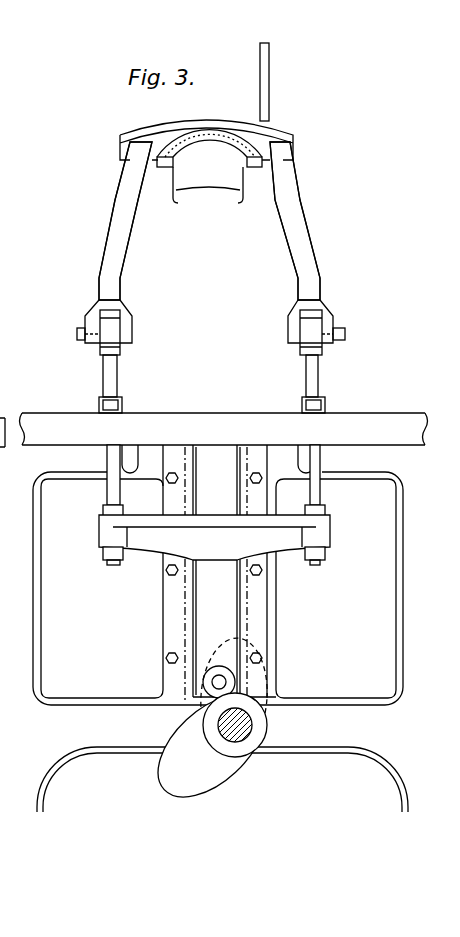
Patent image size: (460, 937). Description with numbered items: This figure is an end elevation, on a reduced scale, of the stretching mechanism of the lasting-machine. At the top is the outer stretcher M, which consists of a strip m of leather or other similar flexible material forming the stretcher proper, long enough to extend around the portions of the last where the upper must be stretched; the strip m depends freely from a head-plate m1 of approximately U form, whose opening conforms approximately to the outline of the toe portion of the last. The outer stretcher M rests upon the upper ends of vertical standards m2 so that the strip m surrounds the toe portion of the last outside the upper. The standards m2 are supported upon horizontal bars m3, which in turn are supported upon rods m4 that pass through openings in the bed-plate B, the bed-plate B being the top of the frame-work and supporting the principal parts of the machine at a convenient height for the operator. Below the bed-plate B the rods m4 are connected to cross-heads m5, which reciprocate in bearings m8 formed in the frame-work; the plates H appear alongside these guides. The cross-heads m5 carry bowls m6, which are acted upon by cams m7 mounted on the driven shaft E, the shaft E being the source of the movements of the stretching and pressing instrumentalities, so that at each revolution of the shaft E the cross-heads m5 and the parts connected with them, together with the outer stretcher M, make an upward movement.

The strip m is at (209, 166).
The head-plate m1 is at (188, 121).
The outer stretcher M is at (209, 197).
The vertical standards m2 is at (116, 233).
The horizontal bars m3 is at (211, 327).
The rods m4 is at (118, 388).
The cross-heads m5 is at (214, 505).
The bowls m6 is at (220, 667).
The cams m7 is at (231, 645).
The bearings m8 is at (166, 617).
The bed-plate B is at (214, 430).
The plates H is at (398, 587).
The driven shaft E is at (253, 732).